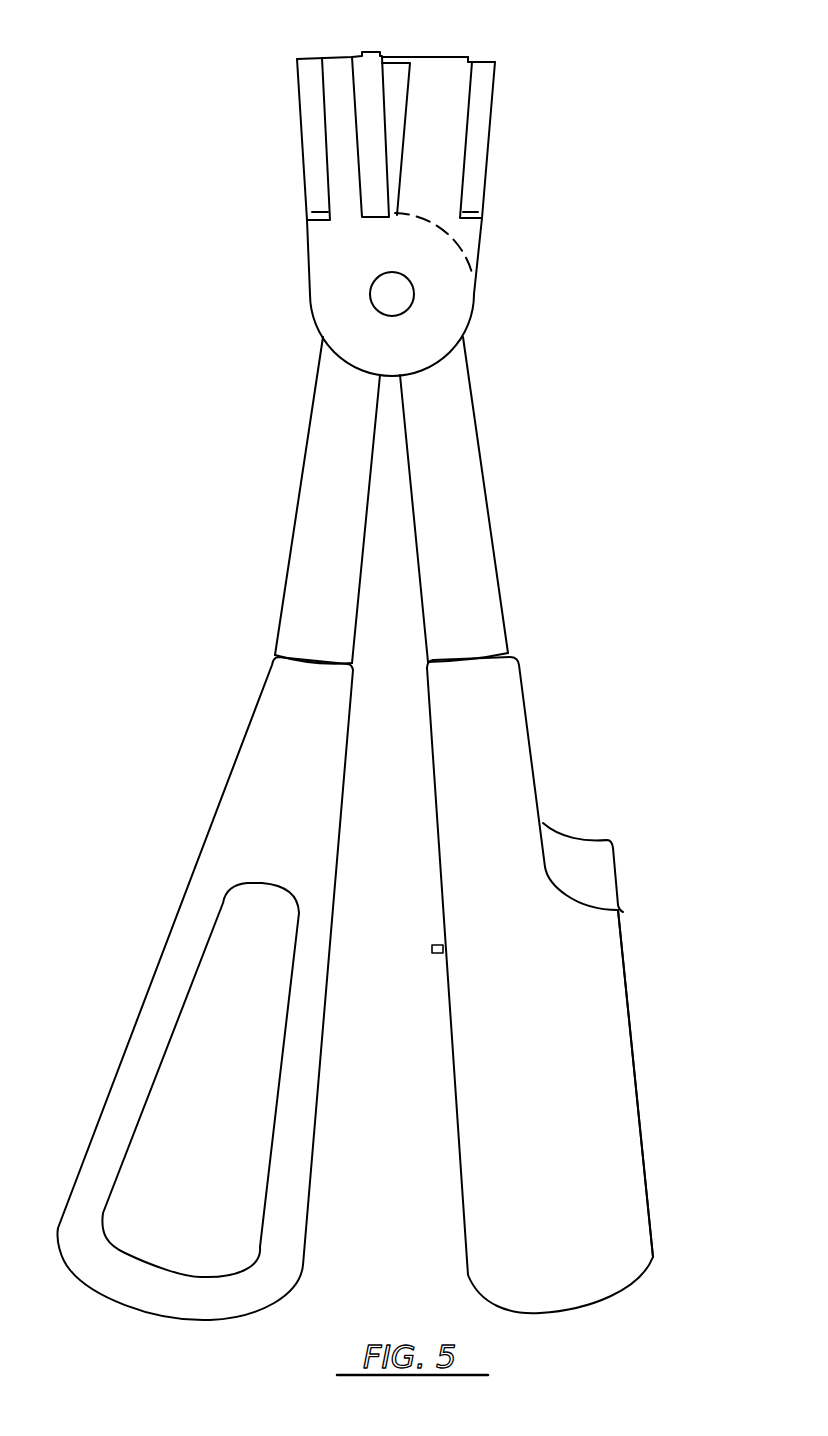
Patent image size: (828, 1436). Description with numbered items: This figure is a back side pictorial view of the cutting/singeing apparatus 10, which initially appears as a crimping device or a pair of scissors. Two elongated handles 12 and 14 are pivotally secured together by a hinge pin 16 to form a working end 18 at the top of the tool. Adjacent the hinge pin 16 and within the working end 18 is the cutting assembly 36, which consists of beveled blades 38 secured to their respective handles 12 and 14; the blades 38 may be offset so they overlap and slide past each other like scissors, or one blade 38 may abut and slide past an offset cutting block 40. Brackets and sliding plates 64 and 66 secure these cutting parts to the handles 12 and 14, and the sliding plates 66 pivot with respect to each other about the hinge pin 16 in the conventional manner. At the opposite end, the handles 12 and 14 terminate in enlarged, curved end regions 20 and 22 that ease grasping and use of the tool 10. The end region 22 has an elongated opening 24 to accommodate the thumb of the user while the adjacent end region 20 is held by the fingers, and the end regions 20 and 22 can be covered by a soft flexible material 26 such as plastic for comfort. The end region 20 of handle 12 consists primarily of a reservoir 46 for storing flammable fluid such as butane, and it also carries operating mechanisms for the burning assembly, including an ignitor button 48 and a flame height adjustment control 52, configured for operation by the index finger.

The cutting/singeing apparatus 10 is at (284, 446).
The elongated handle 12 is at (495, 552).
The elongated handle 14 is at (285, 582).
The hinge pin 16 is at (370, 292).
The working end 18 is at (288, 157).
The end region 20 is at (645, 1158).
The end region 22 is at (100, 1110).
The elongated opening 24 is at (148, 1100).
The soft flexible material 26 is at (298, 655).
The cutting assembly 36 is at (447, 56).
The beveled blade 38 is at (334, 57).
The cutting block 40 is at (468, 57).
The reservoir 46 is at (637, 1018).
The ignitor button 48 is at (592, 840).
The flame height adjustment control 52 is at (437, 944).
The brackets 64 is at (300, 98).
The sliding plates 66 is at (481, 252).